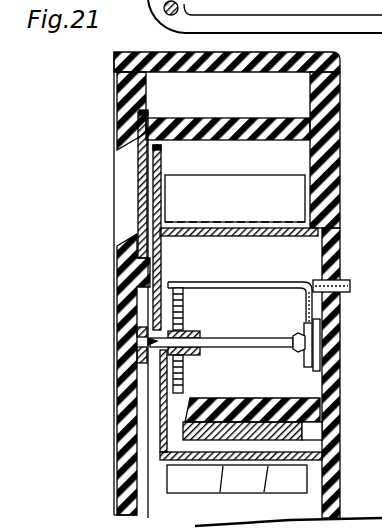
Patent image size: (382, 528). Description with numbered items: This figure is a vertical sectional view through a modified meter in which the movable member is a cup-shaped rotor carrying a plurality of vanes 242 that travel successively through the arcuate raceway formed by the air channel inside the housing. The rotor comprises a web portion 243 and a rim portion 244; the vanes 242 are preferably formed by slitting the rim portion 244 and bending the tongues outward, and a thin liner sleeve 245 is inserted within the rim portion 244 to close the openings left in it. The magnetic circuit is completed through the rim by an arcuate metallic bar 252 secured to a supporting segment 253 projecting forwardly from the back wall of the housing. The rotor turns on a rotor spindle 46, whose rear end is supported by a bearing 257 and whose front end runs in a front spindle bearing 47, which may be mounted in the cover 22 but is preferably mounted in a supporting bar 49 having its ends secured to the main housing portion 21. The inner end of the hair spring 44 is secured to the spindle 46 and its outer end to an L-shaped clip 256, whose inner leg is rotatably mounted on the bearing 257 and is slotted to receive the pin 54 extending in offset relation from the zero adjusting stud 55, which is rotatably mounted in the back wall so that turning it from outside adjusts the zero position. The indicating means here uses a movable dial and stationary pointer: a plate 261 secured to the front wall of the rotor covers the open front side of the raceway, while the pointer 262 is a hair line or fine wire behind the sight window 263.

The main housing portion 21 is at (338, 398).
The cover 22 is at (125, 425).
The hair spring 44 is at (185, 308).
The rotor spindle 46 is at (236, 338).
The front spindle bearing 47 is at (135, 345).
The supporting bar 49 is at (138, 333).
The pin 54 is at (313, 303).
The zero adjusting stud 55 is at (340, 283).
The vanes 242 is at (238, 192).
The web portion 243 is at (160, 443).
The rim portion 244 is at (223, 467).
The liner sleeve 245 is at (268, 467).
The arcuate metallic bar 252 is at (320, 443).
The supporting segment 253 is at (225, 393).
The L-shaped clip 256 is at (235, 273).
The bearing 257 is at (298, 351).
The plate 261 is at (156, 200).
The pointer 262 is at (146, 163).
The sight window 263 is at (146, 221).